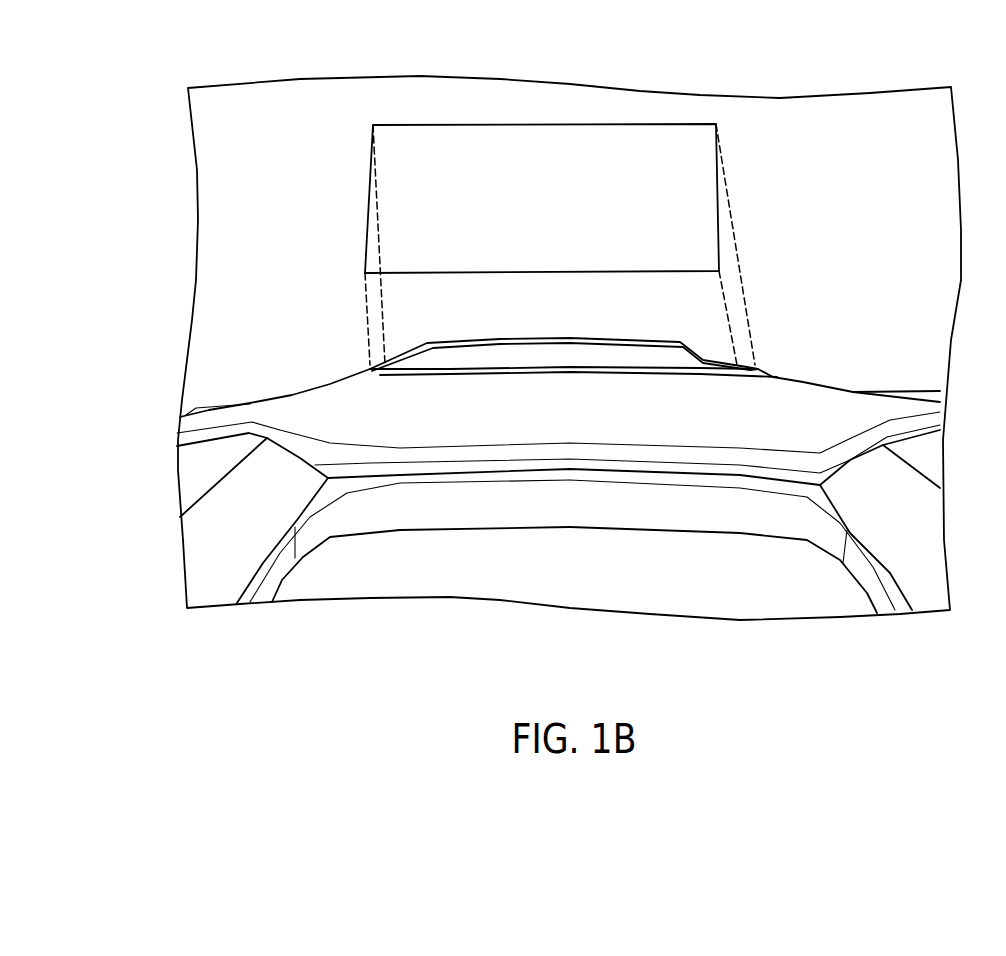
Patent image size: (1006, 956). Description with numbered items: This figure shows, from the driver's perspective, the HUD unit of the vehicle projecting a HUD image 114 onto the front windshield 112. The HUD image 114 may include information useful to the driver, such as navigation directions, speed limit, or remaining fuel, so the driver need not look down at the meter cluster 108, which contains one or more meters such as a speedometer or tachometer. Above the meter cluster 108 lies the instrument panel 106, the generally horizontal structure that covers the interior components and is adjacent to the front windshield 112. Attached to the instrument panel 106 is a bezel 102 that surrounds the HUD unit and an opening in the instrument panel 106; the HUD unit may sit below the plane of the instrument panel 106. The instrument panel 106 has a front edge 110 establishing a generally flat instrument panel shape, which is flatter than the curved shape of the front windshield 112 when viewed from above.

The bezel 102 is at (758, 362).
The instrument panel 106 is at (835, 395).
The meter cluster 108 is at (833, 597).
The front edge 110 is at (368, 468).
The front windshield 112 is at (882, 108).
The HUD image 114 is at (678, 135).